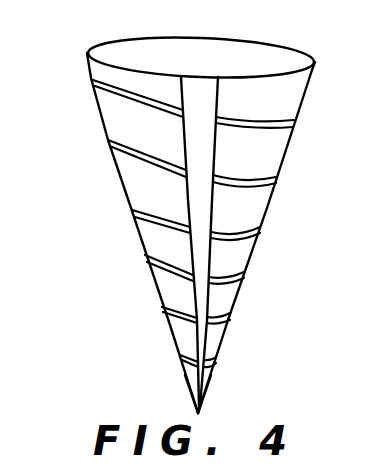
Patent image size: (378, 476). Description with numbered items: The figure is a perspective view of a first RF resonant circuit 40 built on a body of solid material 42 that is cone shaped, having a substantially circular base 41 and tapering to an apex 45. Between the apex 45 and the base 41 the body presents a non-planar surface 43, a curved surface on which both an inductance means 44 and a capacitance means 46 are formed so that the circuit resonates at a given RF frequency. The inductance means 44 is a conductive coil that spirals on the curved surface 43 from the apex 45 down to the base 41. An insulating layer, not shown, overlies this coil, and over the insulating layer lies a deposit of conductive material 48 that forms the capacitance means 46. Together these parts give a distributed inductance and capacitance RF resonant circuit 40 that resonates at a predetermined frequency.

The first RF resonant circuit 40 is at (241, 30).
The substantially circular base 41 is at (153, 38).
The body of solid material 42 is at (150, 229).
The non-planar surface 43 is at (285, 168).
The inductance means 44 is at (243, 230).
The apex 45 is at (198, 417).
The capacitance means 46 is at (217, 255).
The deposit of conductive material 48 is at (123, 170).